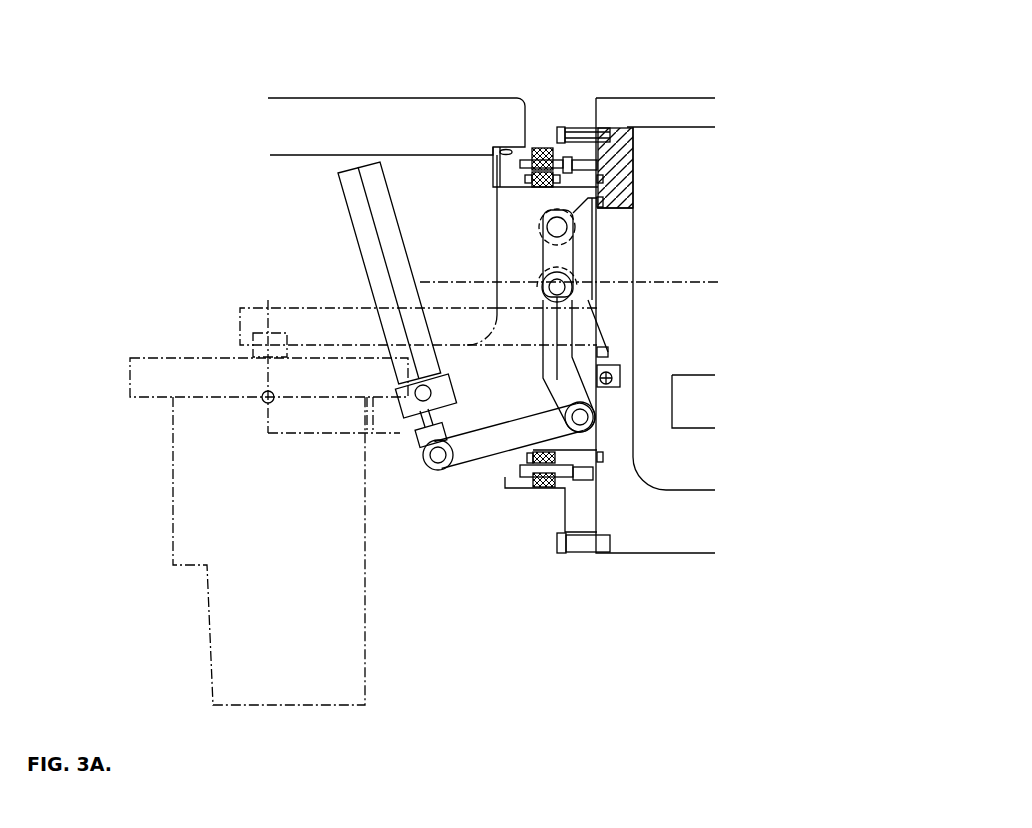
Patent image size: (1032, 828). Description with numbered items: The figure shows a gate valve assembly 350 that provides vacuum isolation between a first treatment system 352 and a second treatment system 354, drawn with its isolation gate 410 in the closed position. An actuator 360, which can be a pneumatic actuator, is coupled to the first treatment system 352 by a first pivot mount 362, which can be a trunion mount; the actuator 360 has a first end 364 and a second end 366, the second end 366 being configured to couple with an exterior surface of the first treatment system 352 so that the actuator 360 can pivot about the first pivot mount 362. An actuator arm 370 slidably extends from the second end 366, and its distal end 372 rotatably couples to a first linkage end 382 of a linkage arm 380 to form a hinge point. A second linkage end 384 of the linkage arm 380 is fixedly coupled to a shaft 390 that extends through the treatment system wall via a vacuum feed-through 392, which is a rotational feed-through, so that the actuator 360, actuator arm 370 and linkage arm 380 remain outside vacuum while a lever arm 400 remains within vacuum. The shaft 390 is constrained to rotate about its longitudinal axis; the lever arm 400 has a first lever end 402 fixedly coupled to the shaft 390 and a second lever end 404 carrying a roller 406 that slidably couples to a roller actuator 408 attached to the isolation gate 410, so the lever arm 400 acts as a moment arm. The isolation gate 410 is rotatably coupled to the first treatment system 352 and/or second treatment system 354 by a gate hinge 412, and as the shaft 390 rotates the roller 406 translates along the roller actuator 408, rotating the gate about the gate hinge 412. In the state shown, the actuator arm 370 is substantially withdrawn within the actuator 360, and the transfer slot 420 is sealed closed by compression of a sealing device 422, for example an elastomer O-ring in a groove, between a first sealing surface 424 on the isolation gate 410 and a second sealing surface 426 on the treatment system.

The gate valve assembly 350 is at (425, 568).
The first treatment system 352 is at (408, 97).
The second treatment system 354 is at (658, 97).
The actuator 360 is at (347, 205).
The first pivot mount 362 is at (410, 395).
The first end 364 is at (357, 165).
The second end 366 is at (403, 417).
The actuator arm 370 is at (423, 445).
The distal end 372 is at (442, 467).
The linkage arm 380 is at (567, 462).
The first linkage end 382 is at (460, 457).
The second linkage end 384 is at (495, 433).
The shaft 390 is at (593, 415).
The vacuum feed-through 392 is at (595, 418).
The lever arm 400 is at (565, 363).
The first lever end 402 is at (567, 403).
The second lever end 404 is at (548, 313).
The roller 406 is at (548, 276).
The roller actuator 408 is at (548, 250).
The isolation gate 410 is at (585, 268).
The gate hinge 412 is at (618, 372).
The transfer slot 420 is at (623, 216).
The sealing device 422 is at (625, 185).
The first sealing surface 424 is at (600, 224).
The second sealing surface 426 is at (590, 350).